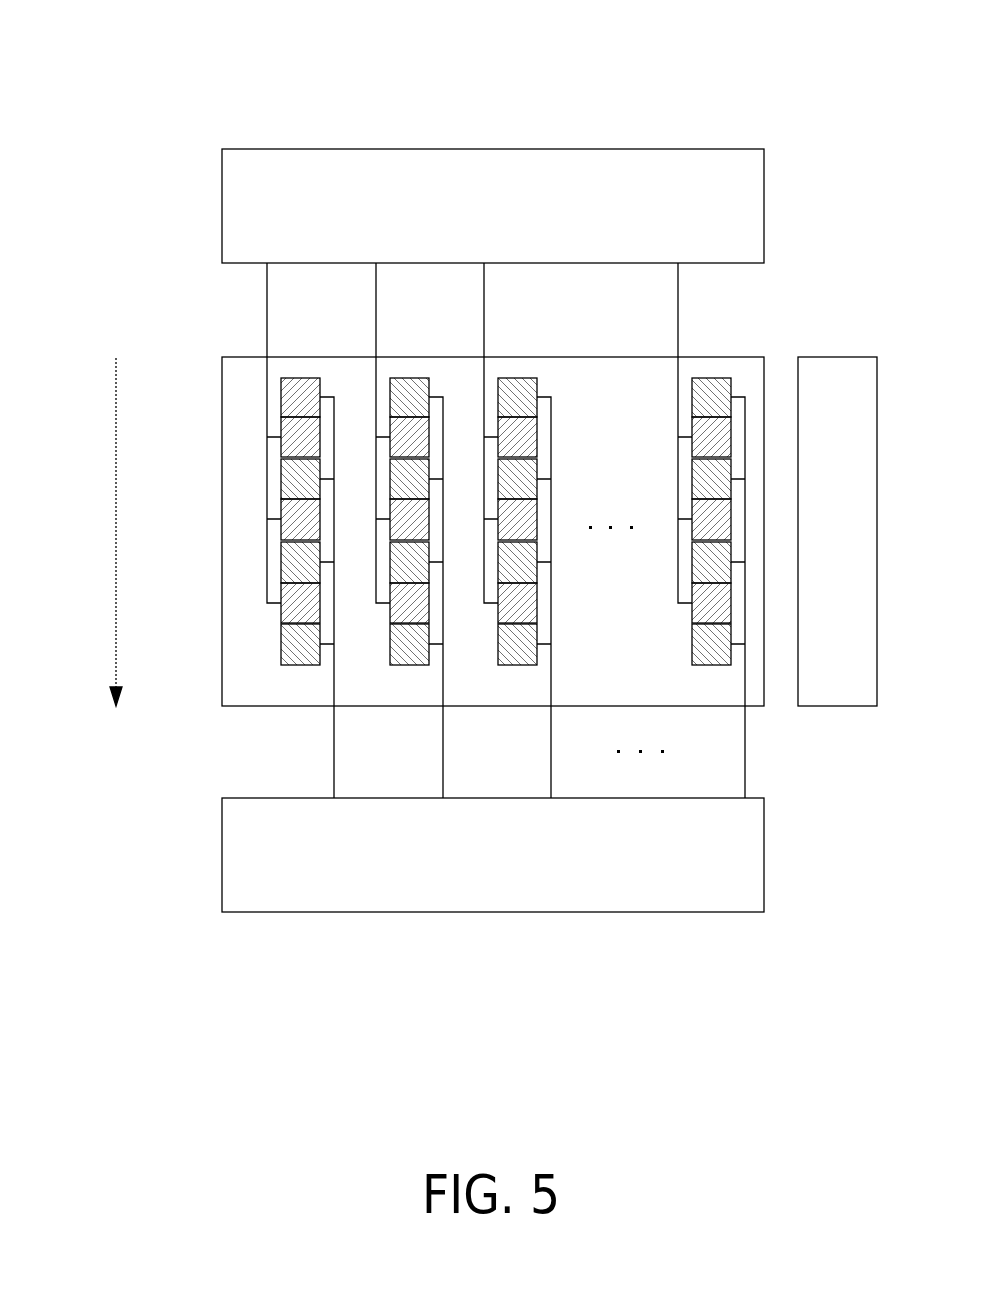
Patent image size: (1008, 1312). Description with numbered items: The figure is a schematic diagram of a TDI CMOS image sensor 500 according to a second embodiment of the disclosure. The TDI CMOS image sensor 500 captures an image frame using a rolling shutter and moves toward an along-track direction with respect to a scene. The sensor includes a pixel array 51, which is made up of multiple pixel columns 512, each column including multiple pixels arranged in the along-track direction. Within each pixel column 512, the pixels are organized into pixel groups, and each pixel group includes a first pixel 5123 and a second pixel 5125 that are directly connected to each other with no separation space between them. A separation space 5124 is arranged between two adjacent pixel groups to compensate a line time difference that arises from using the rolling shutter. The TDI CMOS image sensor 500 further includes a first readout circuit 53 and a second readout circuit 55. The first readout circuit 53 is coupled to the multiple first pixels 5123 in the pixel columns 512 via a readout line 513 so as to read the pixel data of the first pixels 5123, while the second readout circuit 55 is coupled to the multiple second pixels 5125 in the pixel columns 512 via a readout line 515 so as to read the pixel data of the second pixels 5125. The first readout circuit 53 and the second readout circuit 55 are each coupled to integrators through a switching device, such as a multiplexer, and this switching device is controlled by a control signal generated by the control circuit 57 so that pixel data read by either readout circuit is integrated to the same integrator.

The TDI CMOS image sensor 500 is at (192, 38).
The pixel array 51 is at (229, 357).
The first readout circuit 53 is at (680, 912).
The second readout circuit 55 is at (698, 149).
The control circuit 57 is at (838, 357).
The pixel column 512 is at (441, 479).
The readout line 513 is at (333, 748).
The readout line 515 is at (677, 307).
The first pixel 5123 is at (281, 394).
The separation space 5124 is at (281, 458).
The second pixel 5125 is at (281, 430).